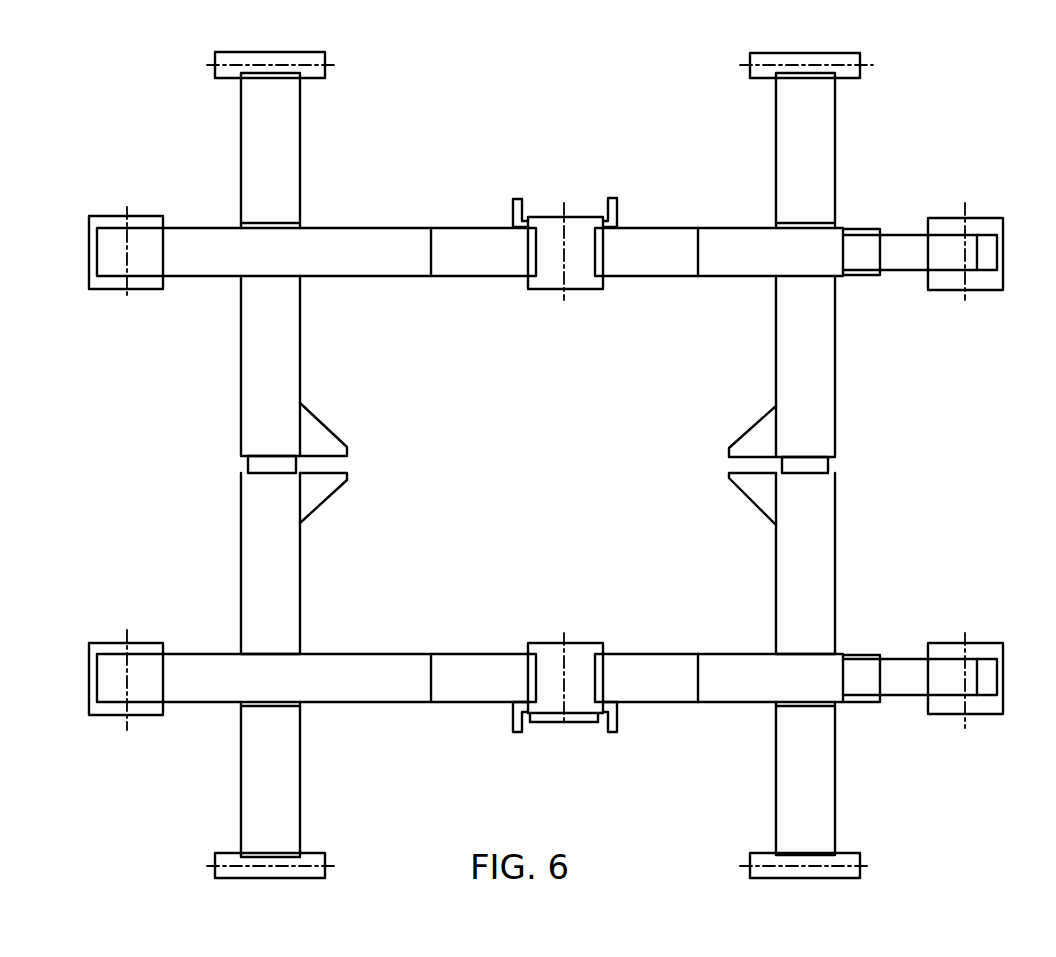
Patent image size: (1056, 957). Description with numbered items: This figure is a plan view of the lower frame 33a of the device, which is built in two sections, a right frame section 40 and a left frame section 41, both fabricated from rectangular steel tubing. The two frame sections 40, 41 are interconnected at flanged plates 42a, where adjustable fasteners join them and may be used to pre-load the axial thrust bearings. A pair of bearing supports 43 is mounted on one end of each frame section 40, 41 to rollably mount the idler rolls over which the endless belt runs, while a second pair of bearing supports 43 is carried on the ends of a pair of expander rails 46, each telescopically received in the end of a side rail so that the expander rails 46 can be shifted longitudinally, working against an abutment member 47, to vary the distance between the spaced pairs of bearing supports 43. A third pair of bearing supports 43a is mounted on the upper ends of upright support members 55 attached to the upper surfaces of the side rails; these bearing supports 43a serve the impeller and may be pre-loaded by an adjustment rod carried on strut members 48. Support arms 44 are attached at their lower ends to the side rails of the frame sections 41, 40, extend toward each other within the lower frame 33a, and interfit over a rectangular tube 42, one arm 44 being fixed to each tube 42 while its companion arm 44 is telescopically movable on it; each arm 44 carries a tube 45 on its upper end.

The lower frame 33a is at (584, 449).
The right frame section 40 is at (327, 222).
The left frame section 41 is at (330, 708).
The rectangular tube 42 is at (830, 465).
The flanged plates 42a is at (752, 428).
The bearing supports 43 is at (100, 216).
The bearing supports 43a is at (535, 217).
The support arms 44 is at (301, 150).
The tube 45 is at (228, 80).
The expander rails 46 is at (901, 232).
The abutment member 47 is at (862, 278).
The strut members 48 is at (614, 205).
The upright support members 55 is at (455, 228).